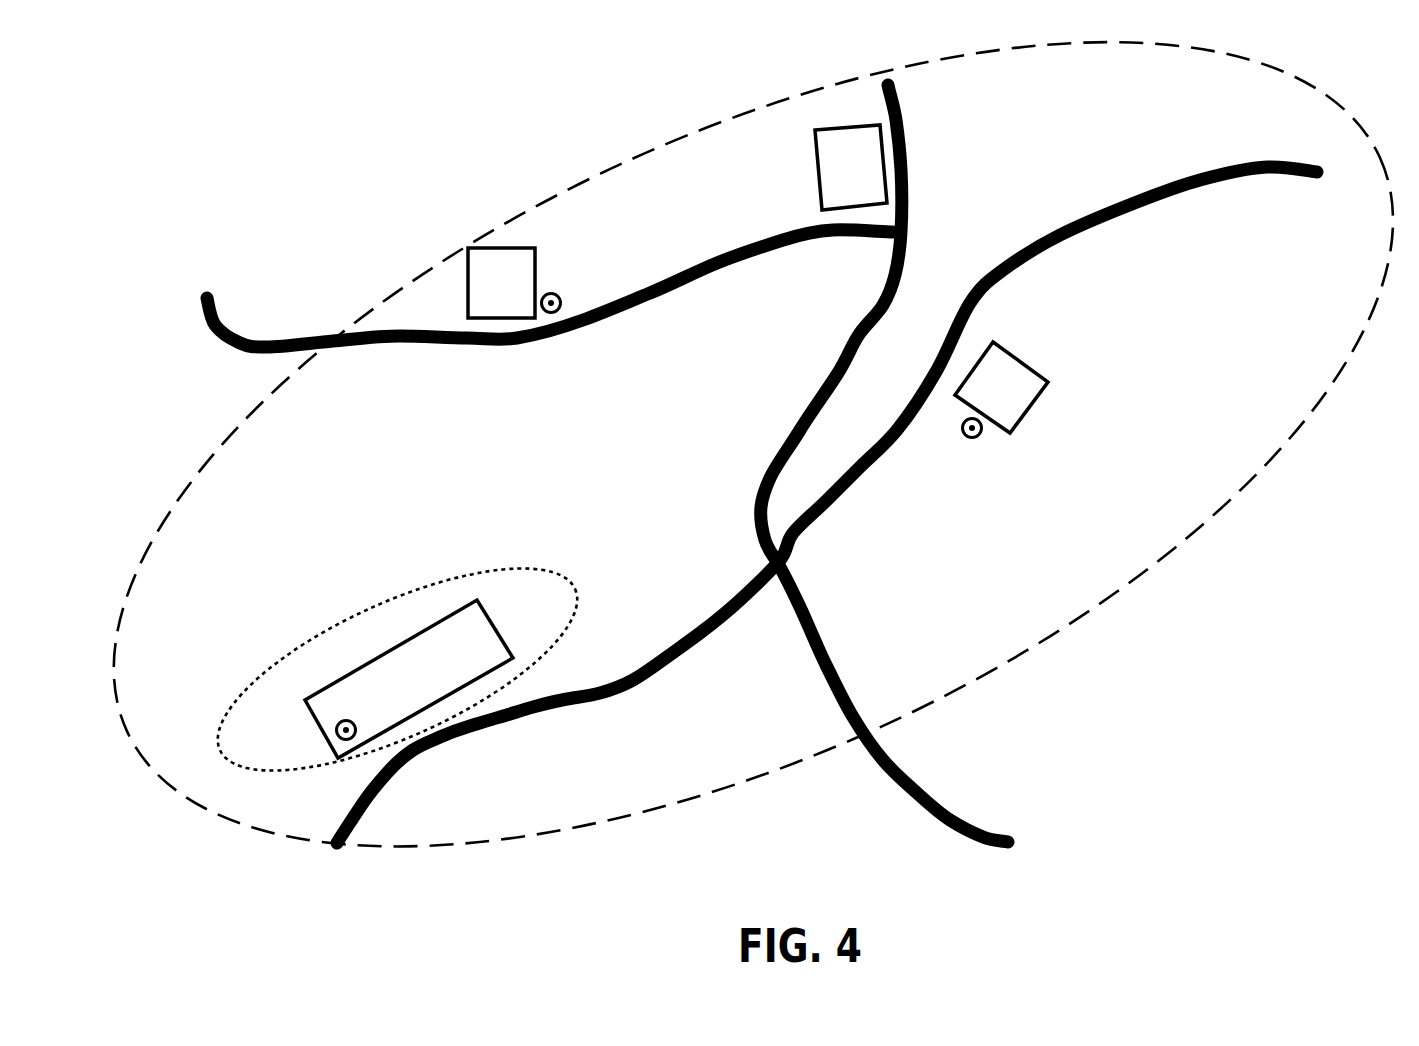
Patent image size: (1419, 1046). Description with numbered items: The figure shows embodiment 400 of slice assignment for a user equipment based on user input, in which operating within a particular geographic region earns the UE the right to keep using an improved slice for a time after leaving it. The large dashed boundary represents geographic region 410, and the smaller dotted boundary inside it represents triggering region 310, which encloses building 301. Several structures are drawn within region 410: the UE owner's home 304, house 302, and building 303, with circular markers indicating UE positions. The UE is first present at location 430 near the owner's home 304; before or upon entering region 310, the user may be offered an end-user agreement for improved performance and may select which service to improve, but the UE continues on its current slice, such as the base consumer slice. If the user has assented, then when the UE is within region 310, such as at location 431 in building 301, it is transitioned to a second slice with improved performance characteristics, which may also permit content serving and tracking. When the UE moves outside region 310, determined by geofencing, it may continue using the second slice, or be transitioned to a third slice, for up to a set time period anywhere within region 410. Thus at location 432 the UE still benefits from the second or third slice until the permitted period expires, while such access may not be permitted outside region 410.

The embodiment 400 is at (183, 104).
The geographic region 410 is at (690, 135).
The region 310 is at (432, 585).
The building 301 is at (428, 687).
The house 302 is at (519, 293).
The building 303 is at (868, 177).
The UE owner's home 304 is at (1019, 401).
The location 430 is at (975, 440).
The location 431 is at (336, 731).
The location 432 is at (560, 297).